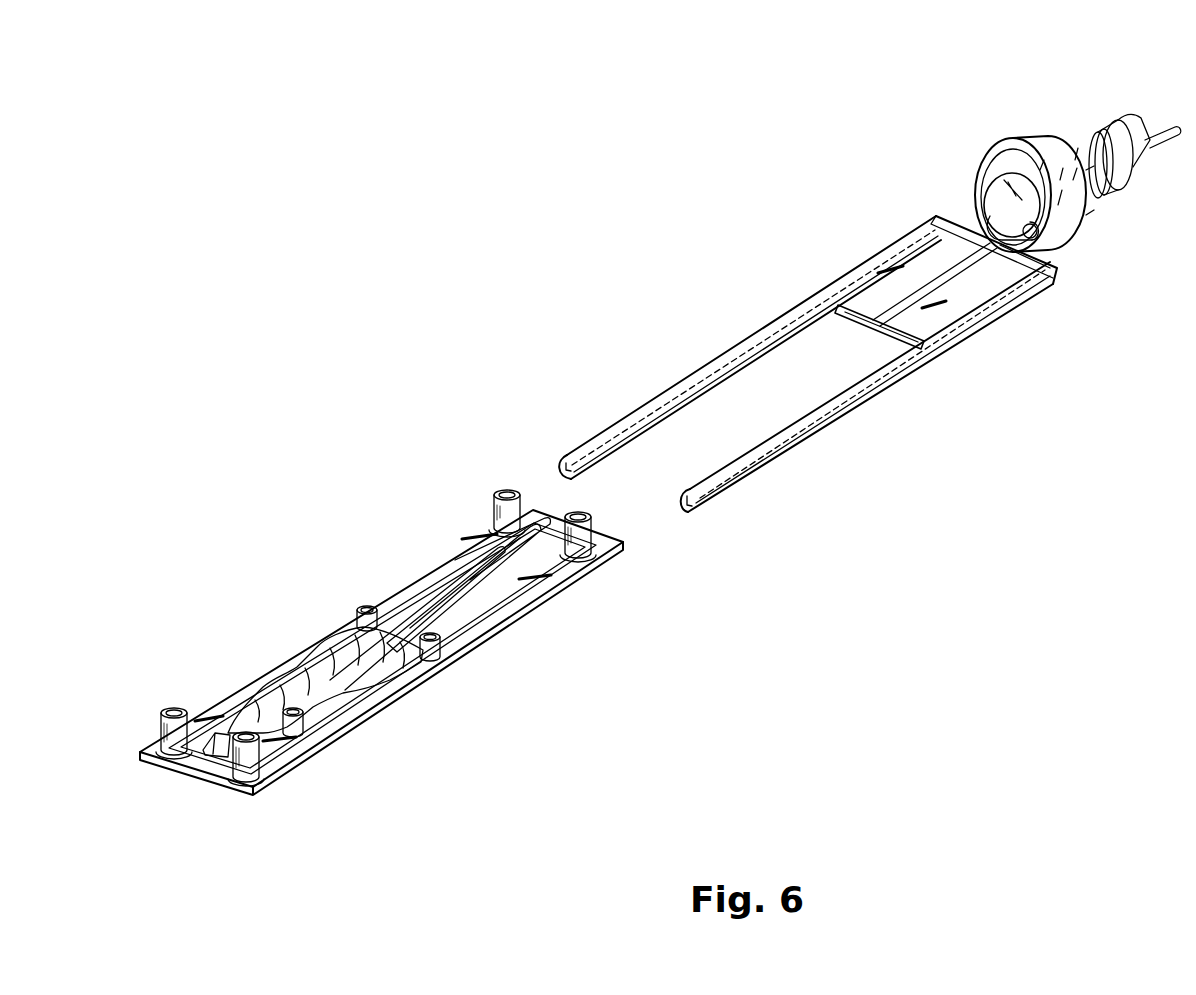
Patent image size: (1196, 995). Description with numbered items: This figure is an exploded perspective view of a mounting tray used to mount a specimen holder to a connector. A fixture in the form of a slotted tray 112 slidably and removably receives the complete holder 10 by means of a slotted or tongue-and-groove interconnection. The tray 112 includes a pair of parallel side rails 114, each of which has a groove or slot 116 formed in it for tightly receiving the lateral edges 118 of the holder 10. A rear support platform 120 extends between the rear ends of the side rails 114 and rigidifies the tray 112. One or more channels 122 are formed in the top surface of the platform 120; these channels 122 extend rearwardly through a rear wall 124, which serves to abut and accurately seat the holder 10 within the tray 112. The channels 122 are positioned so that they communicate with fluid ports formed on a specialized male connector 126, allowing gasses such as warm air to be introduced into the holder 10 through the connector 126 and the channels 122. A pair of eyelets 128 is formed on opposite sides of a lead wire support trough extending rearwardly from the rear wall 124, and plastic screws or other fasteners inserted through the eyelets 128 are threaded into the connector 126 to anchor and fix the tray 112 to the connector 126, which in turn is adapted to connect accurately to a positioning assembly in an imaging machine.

The holder 10 is at (220, 628).
The slotted tray 112 is at (984, 428).
The side rails 114 is at (655, 403).
The groove or slot 116 is at (682, 503).
The lateral edges 118 is at (448, 545).
The rear support platform 120 is at (978, 284).
The channels 122 is at (890, 318).
The rear wall 124 is at (975, 231).
The male connector 126 is at (1018, 143).
The eyelets 128 is at (975, 206).